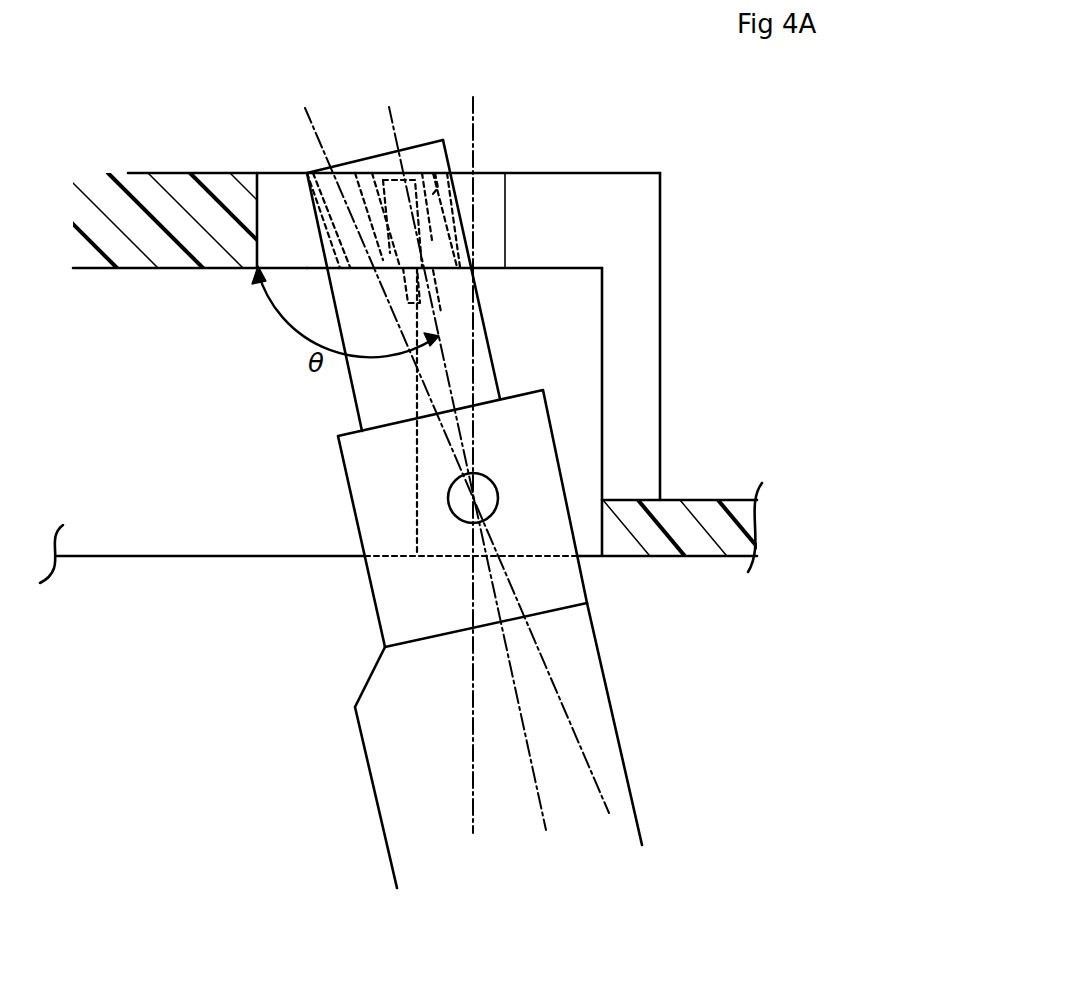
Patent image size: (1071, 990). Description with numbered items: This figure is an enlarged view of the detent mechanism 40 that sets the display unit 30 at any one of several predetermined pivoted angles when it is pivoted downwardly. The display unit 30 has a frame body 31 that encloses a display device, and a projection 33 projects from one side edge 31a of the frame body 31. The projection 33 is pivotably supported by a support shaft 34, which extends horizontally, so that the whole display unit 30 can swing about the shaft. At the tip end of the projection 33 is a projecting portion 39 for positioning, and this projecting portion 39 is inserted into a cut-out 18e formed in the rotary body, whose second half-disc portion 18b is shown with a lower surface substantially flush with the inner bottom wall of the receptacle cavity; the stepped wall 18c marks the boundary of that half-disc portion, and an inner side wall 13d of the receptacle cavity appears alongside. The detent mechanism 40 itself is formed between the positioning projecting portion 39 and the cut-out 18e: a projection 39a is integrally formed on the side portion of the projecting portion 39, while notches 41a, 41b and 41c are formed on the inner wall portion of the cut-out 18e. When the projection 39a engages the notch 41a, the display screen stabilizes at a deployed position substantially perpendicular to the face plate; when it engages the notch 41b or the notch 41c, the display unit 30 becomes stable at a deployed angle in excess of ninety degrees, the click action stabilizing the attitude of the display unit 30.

The inner side wall 13d is at (235, 545).
The second half-disc portion 18b is at (172, 262).
The wall 18c is at (418, 446).
The cut-out 18e is at (283, 263).
The display unit 30 is at (495, 514).
The frame body 31 is at (620, 778).
The side edge 31a is at (553, 605).
The projection 33 is at (402, 588).
The support shaft 34 is at (456, 500).
The projecting portion for positioning 39 is at (380, 398).
The projection 39a is at (432, 304).
The detent mechanism 40 is at (495, 152).
The notch 41a is at (492, 213).
The notch 41b is at (437, 190).
The notch 41c is at (313, 210).